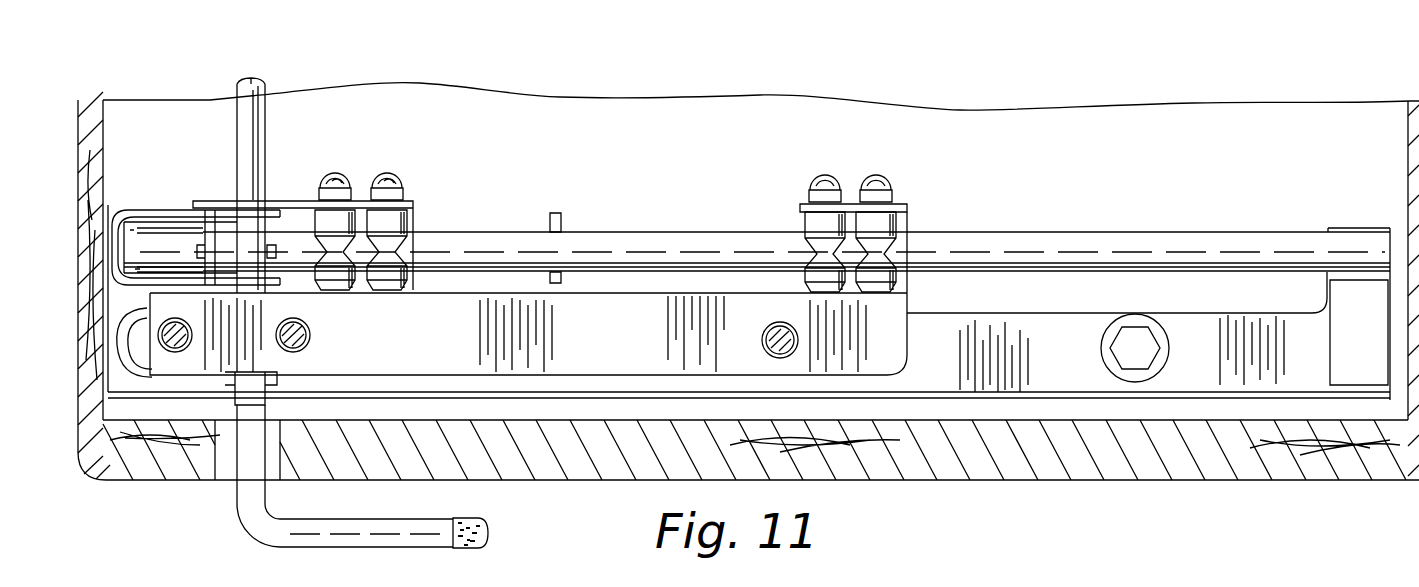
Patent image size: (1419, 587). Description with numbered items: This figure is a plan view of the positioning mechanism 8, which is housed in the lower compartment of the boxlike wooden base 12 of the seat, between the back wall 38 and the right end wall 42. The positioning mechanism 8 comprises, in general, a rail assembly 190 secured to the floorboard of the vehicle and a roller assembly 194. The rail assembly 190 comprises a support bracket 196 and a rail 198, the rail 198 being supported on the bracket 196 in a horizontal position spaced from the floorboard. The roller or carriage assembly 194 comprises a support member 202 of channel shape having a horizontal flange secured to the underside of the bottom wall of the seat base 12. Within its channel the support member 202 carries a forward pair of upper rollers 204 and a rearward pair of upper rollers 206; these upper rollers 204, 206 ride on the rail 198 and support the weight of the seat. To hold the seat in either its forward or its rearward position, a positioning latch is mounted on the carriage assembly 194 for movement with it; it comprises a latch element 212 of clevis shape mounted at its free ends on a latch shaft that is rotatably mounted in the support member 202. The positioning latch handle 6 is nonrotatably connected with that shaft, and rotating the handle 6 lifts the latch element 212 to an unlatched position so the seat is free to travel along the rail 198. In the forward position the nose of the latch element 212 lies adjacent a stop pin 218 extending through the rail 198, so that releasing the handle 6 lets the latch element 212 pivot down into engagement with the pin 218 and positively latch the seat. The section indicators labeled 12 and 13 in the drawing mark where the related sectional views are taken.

The positioning latch handle 6 is at (355, 547).
The positioning mechanism 8 is at (1178, 150).
The base 12 is at (70, 68).
The section line 13- 13 is at (326, 137).
The back wall 38 is at (104, 125).
The right end wall 42 is at (1033, 480).
The rail assembly 190 is at (1138, 232).
The roller assembly 194 is at (317, 194).
The support bracket 196 is at (948, 338).
The rail 198 is at (1028, 252).
The support member 202 is at (907, 220).
The upper rollers 204 is at (805, 238).
The upper rollers 206 is at (412, 210).
The latch element 212 is at (138, 210).
The stop pin 218 is at (562, 228).